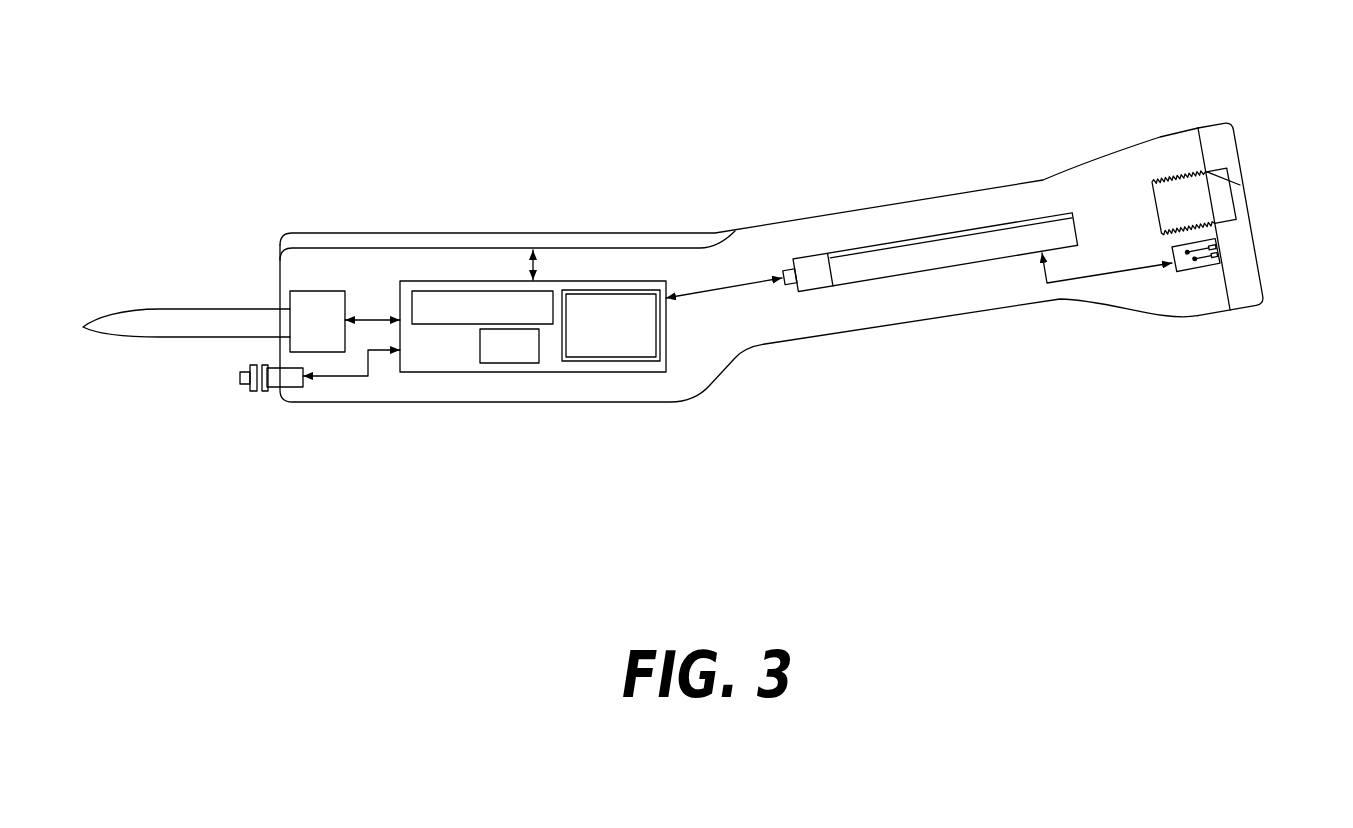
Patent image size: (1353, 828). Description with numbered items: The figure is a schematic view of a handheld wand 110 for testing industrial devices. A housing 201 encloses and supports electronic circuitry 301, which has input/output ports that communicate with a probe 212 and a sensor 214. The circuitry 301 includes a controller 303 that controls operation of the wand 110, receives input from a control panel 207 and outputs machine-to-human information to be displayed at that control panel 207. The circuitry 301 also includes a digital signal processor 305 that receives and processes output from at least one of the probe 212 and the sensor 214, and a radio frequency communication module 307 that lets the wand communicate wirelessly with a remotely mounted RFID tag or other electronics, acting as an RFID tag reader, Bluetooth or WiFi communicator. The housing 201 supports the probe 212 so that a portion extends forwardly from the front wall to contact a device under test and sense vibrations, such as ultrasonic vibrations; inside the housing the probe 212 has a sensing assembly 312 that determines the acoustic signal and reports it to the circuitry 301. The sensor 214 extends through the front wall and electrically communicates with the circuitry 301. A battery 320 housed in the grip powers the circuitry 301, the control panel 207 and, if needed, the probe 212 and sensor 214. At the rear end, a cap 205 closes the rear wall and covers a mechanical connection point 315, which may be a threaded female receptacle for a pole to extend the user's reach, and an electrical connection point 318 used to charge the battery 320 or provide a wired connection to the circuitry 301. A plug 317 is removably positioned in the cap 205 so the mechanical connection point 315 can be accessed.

The wand 110 is at (676, 170).
The housing 201 is at (440, 402).
The cap 205 is at (1205, 123).
The control panel 207 is at (392, 233).
The probe 212 is at (163, 308).
The sensor 214 is at (273, 388).
The electronic circuitry 301 is at (499, 281).
The controller 303 is at (453, 291).
The digital signal processor 305 is at (510, 363).
The radio frequency communication module 307 is at (598, 290).
The sensing assembly 312 is at (322, 291).
The mechanical connection point 315 is at (1167, 178).
The plug 317 is at (1241, 181).
The electrical connection point 318 is at (1190, 273).
The battery 320 is at (877, 245).